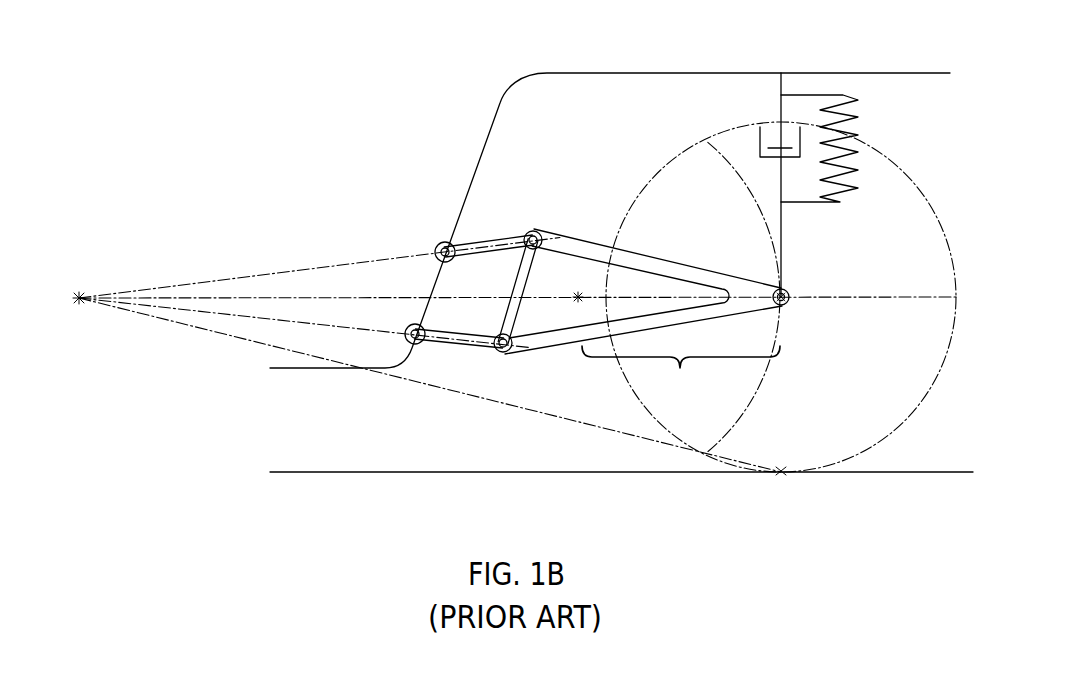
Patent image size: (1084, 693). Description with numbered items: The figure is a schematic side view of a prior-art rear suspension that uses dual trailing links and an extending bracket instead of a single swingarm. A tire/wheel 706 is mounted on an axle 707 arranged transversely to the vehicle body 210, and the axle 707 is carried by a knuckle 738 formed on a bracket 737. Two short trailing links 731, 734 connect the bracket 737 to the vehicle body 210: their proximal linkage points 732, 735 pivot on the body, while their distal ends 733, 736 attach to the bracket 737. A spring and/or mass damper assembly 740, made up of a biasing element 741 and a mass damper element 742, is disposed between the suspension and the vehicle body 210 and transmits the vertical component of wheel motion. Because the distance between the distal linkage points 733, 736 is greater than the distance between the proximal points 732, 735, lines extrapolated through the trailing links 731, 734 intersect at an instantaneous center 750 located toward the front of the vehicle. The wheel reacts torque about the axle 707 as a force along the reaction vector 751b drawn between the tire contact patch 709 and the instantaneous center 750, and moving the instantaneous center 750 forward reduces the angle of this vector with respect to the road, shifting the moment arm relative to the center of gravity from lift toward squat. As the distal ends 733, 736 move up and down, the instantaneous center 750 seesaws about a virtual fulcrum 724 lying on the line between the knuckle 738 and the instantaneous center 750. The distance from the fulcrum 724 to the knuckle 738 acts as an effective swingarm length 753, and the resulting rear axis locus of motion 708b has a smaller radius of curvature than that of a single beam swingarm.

The vehicle body 210 is at (482, 157).
The tire/wheel 706 is at (873, 443).
The axle 707 is at (790, 293).
The rear axis locus of motion 708b is at (765, 373).
The tire contact patch 709 is at (781, 471).
The virtual fulcrum 724 is at (580, 296).
The trailing link 731 is at (491, 237).
The proximal linkage point 732 is at (440, 248).
The distal end 733 is at (534, 230).
The trailing link 734 is at (457, 346).
The proximal linkage point 735 is at (410, 328).
The distal end 736 is at (510, 346).
The bracket 737 is at (678, 267).
The knuckle 738 is at (844, 271).
The spring and/or mass damper assembly 740 is at (797, 88).
The biasing element 741 is at (858, 117).
The mass damper element 742 is at (760, 142).
The instantaneous center 750 is at (79, 296).
The reaction vector 751b is at (517, 407).
The effective swingarm length 753 is at (681, 378).